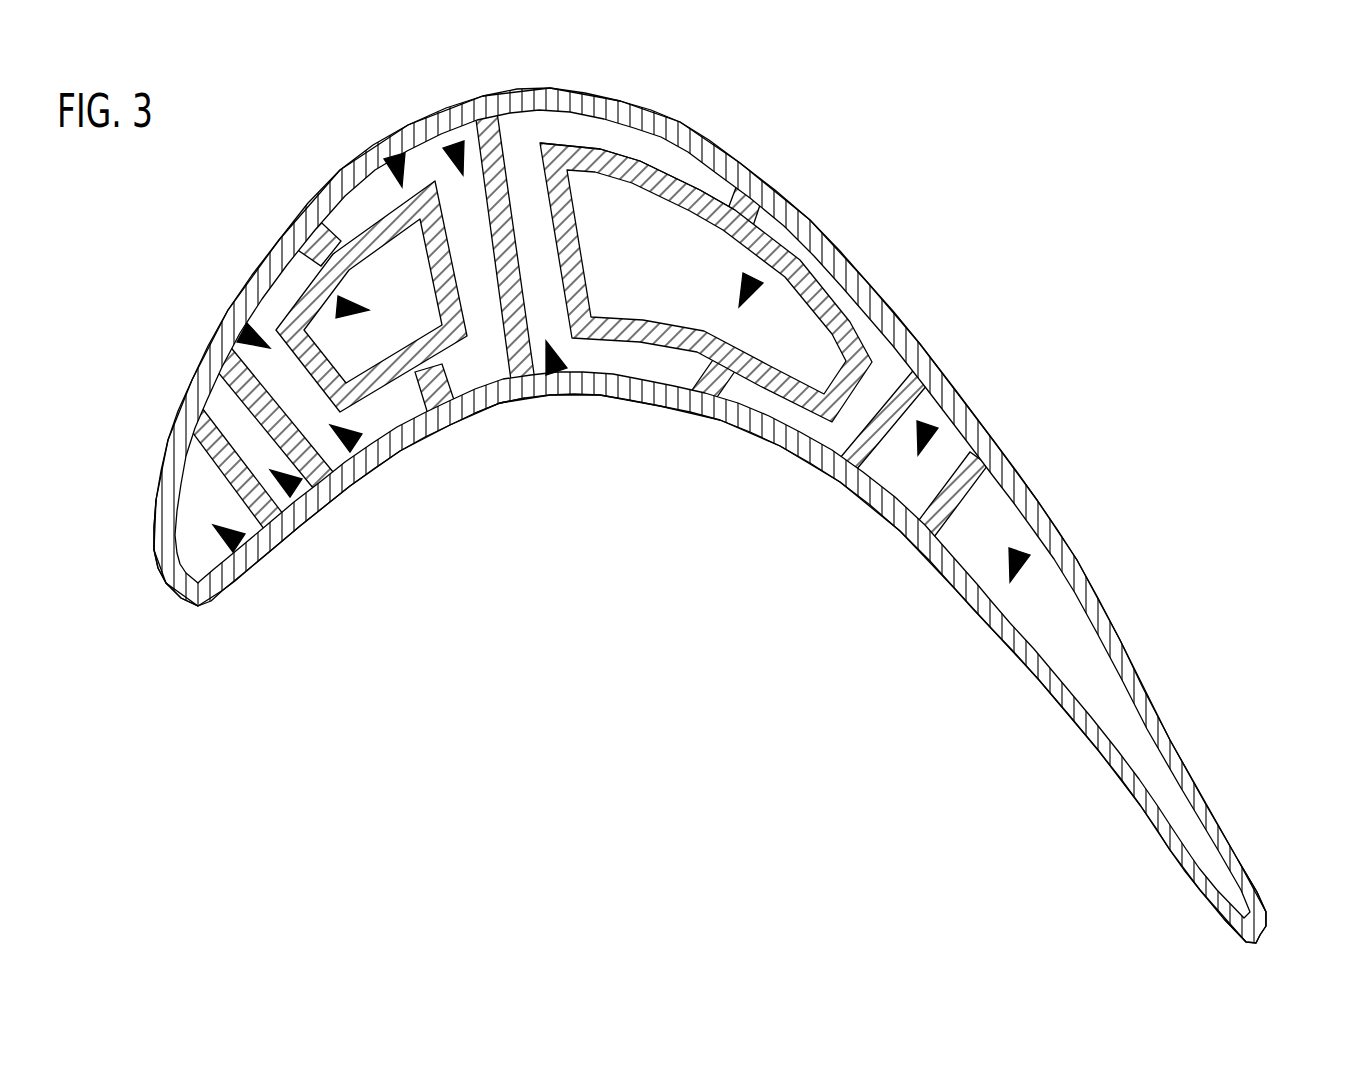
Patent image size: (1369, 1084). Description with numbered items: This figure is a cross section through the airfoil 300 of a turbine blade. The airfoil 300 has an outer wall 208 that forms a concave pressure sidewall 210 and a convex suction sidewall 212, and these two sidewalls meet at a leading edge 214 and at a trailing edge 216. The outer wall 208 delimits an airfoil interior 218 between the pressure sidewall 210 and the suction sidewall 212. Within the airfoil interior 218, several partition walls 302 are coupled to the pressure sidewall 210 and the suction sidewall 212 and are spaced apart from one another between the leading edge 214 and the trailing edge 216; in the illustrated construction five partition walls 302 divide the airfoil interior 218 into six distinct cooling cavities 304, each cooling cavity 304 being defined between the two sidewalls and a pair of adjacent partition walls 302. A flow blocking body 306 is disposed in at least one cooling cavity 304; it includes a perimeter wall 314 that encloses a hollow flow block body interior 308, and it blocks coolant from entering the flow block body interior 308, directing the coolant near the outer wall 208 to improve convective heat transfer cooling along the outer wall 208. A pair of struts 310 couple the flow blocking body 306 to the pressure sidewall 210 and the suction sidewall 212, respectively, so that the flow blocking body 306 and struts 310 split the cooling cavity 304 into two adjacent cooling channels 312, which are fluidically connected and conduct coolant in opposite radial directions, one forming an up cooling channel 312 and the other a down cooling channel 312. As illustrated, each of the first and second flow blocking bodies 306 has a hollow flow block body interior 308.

The airfoil 300 is at (1054, 206).
The outer wall 208 is at (343, 160).
The pressure sidewall 210 is at (502, 408).
The suction sidewall 212 is at (597, 92).
The leading edge 214 is at (186, 604).
The trailing edge 216 is at (1262, 938).
The airfoil interior 218 is at (454, 144).
The partition wall 302 is at (503, 153).
The cooling cavity 304 is at (557, 371).
The flow blocking body 306 is at (308, 282).
The flow block body interior 308 is at (337, 307).
The strut 310 is at (322, 212).
The cooling channel 312 is at (394, 156).
The perimeter wall 314 is at (628, 155).